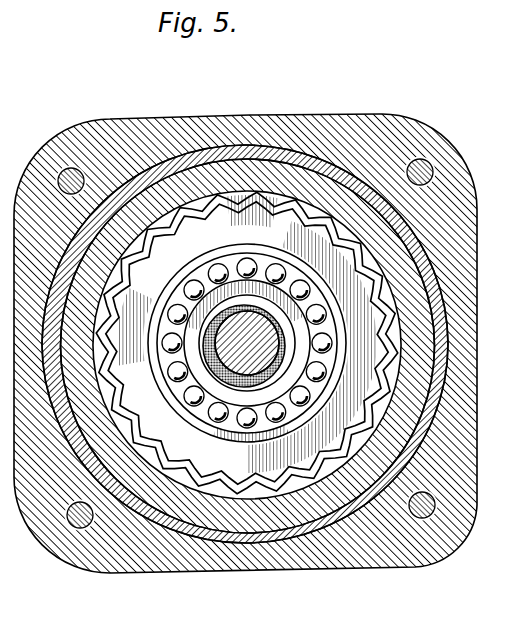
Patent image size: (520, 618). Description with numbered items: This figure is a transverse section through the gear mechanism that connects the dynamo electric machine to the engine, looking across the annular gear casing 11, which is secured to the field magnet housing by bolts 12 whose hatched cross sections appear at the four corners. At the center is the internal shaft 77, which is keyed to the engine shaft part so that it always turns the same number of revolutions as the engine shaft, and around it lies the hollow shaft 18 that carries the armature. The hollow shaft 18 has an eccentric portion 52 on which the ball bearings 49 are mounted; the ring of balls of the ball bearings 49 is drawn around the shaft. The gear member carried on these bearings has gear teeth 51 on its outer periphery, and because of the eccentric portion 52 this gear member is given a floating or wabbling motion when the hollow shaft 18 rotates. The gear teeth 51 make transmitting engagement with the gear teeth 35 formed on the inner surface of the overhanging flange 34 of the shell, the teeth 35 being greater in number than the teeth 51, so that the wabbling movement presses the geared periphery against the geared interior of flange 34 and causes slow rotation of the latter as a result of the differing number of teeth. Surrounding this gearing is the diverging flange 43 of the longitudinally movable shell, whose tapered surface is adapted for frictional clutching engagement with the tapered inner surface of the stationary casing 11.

The gear casing 11 is at (455, 203).
The bolts 12 is at (424, 165).
The hollow shaft 18 is at (285, 334).
The overhanging flange 34 is at (340, 178).
The gear teeth 35 is at (218, 199).
The diverging flange 43 is at (332, 190).
The ball bearings 49 is at (268, 263).
The gear teeth 51 is at (383, 343).
The eccentric portion 52 is at (256, 292).
The internal shaft 77 is at (243, 380).